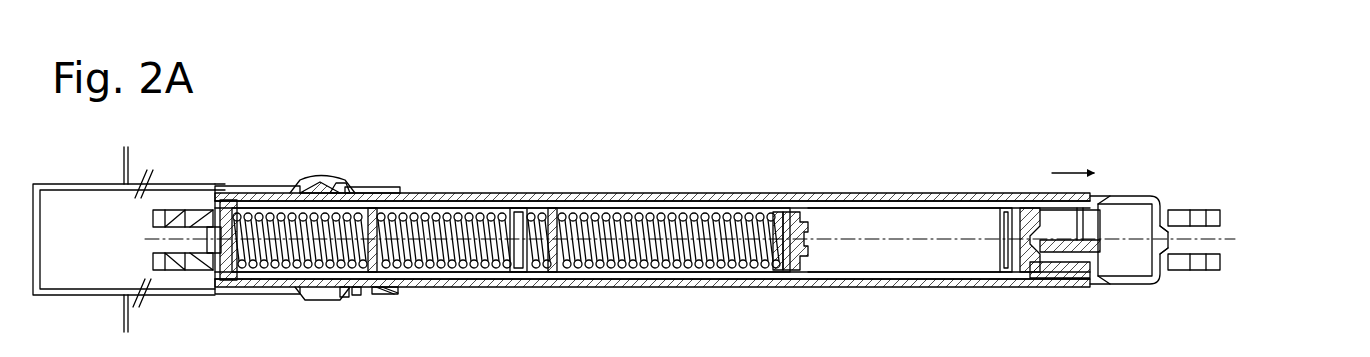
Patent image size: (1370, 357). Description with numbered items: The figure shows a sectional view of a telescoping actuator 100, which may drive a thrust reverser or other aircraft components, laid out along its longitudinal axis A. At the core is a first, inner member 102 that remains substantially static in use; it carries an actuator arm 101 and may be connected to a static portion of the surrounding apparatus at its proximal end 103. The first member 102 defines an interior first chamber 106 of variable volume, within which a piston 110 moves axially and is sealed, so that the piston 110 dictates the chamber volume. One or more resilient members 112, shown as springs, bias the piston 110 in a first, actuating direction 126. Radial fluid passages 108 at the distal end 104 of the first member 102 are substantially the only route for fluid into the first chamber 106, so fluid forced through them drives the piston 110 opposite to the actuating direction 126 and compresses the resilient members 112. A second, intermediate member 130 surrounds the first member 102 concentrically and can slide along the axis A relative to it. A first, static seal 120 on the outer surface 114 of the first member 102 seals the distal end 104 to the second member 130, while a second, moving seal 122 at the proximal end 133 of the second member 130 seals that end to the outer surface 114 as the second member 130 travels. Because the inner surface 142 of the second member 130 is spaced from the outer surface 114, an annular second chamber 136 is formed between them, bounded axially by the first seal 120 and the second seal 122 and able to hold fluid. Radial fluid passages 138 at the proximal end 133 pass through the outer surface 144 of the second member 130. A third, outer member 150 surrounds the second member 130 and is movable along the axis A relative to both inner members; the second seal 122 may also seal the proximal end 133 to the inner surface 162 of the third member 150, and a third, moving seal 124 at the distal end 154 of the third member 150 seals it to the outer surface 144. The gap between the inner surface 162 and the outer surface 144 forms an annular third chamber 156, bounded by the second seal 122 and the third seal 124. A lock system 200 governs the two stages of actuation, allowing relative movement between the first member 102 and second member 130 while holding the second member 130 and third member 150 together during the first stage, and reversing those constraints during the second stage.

The actuator 100 is at (1136, 117).
The actuator arm 101 is at (126, 160).
The first member 102 is at (213, 212).
The proximal end 103 is at (157, 214).
The distal end 104 is at (1035, 230).
The first chamber 106 is at (870, 253).
The fluid passages 108 is at (1025, 206).
The piston 110 is at (802, 215).
The resilient members 112 is at (490, 214).
The outer surface 114 is at (705, 200).
The first seal 120 is at (1052, 276).
The second seal 122 is at (338, 190).
The third seal 124 is at (357, 289).
The first direction 126 is at (1072, 165).
The second member 130 is at (463, 196).
The proximal end 133 is at (312, 188).
The second chamber 136 is at (955, 200).
The fluid passages 138 is at (352, 193).
The inner surface 142 is at (760, 200).
The outer surface 144 is at (569, 196).
The third member 150 is at (178, 296).
The distal end 154 is at (385, 293).
The third chamber 156 is at (345, 292).
The inner surface 162 is at (168, 188).
The lock system 200 is at (321, 178).
The longitudinal axis A is at (940, 252).